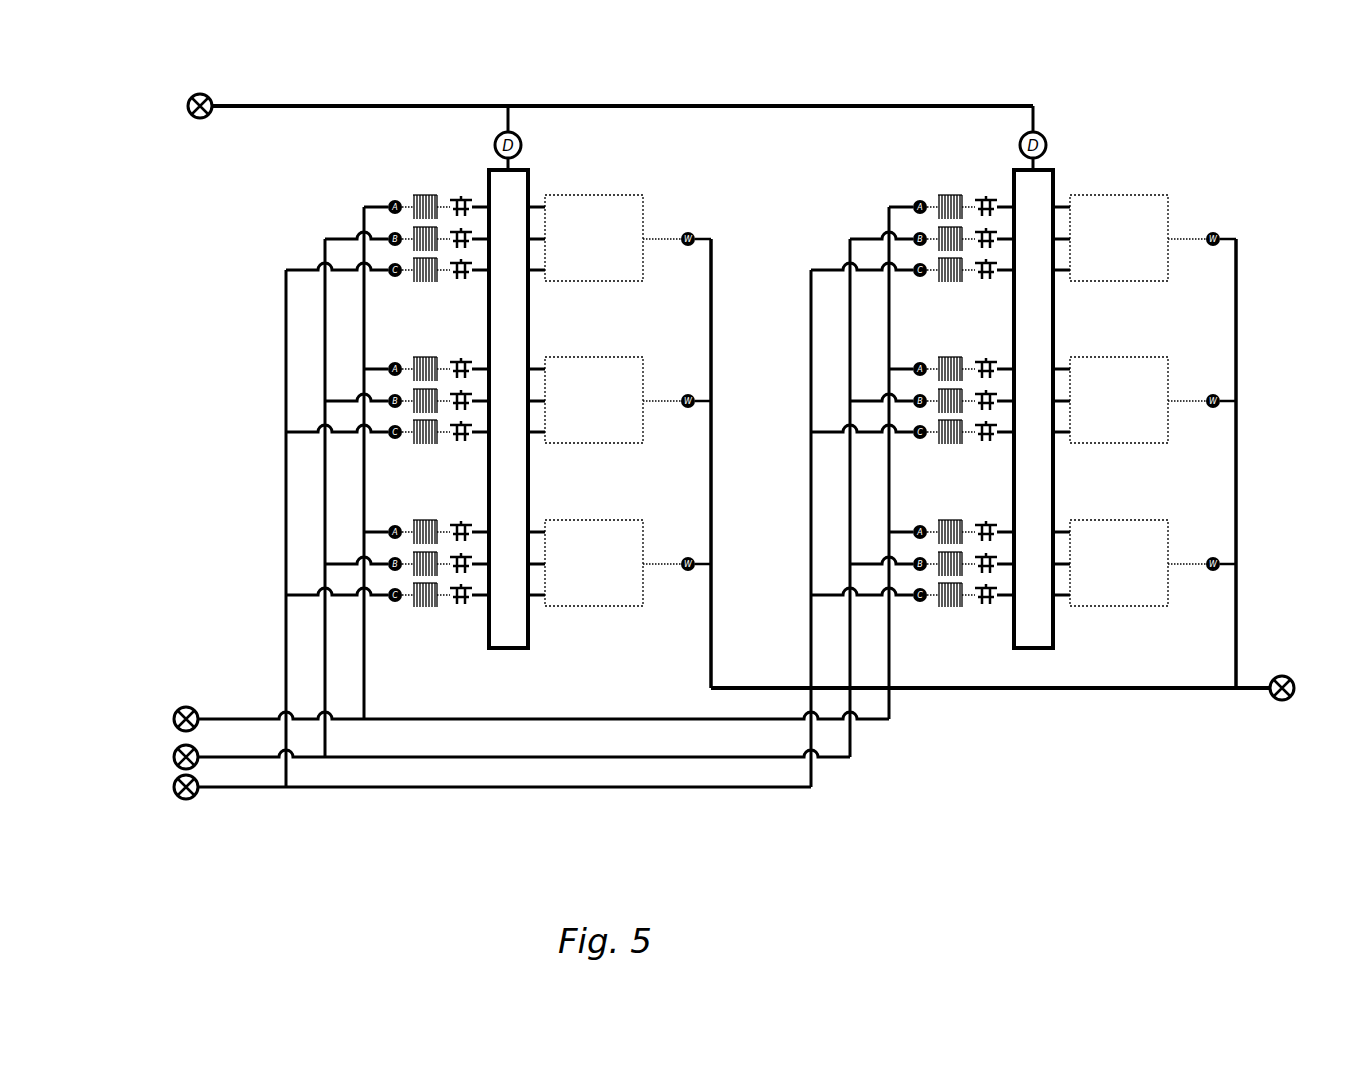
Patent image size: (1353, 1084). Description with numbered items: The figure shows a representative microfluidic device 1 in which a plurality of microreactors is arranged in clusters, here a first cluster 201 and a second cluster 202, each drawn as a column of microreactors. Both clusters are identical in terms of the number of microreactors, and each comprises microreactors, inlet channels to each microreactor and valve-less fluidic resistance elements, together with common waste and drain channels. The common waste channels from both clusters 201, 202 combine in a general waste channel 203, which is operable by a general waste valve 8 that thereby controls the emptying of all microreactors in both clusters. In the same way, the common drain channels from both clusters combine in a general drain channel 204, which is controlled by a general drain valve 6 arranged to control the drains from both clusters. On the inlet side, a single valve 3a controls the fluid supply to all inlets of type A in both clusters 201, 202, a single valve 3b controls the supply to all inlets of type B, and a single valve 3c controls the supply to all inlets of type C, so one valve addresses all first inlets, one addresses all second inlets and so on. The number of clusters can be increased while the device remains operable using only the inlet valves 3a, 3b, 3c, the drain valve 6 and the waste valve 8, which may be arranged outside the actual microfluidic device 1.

The microfluidic device 1 is at (120, 352).
The general drain valve 6 is at (188, 100).
The general waste valve 8 is at (1295, 690).
The valve 3a is at (175, 712).
The valve 3b is at (175, 752).
The valve 3c is at (174, 784).
The first cluster 201 is at (296, 209).
The second cluster 202 is at (836, 210).
The general waste channel 203 is at (1080, 692).
The general drain channel 204 is at (681, 104).